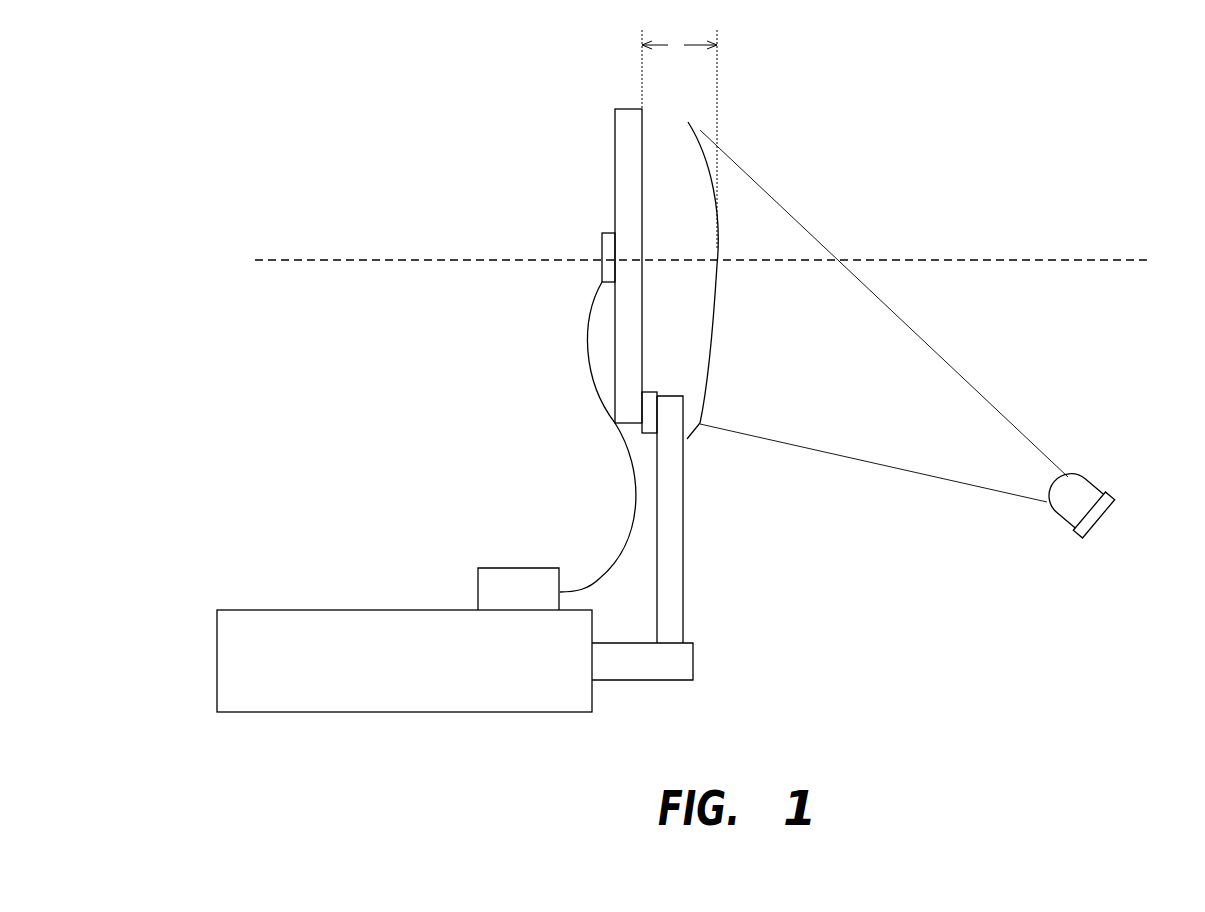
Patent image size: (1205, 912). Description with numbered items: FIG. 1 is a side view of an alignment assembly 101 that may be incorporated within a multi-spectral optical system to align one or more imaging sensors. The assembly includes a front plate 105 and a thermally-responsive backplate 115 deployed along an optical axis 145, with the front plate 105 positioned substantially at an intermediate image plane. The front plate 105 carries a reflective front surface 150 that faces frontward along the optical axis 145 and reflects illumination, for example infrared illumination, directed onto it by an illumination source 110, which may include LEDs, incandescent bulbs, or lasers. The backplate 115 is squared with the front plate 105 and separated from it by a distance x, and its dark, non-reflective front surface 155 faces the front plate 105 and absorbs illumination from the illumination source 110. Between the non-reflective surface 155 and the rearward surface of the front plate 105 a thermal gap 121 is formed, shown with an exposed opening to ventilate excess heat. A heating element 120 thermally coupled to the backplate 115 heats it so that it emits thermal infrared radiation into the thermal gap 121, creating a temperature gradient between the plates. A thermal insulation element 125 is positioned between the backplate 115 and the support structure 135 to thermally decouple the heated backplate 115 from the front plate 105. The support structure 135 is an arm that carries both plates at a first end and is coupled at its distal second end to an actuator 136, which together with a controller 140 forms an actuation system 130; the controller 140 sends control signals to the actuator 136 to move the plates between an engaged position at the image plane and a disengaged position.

The alignment assembly 101 is at (470, 90).
The front plate 105 is at (698, 128).
The illumination source 110 is at (1090, 489).
The backplate 115 is at (615, 130).
The heating element 120 is at (602, 233).
The thermal gap 121 is at (670, 140).
The thermal insulation element 125 is at (650, 433).
The actuation system 130 is at (438, 746).
The support structure 135 is at (683, 550).
The actuator 136 is at (677, 680).
The controller 140 is at (493, 568).
The optical axis 145 is at (1000, 259).
The reflective front surface 150 is at (718, 318).
The non-reflective front surface 155 is at (643, 152).